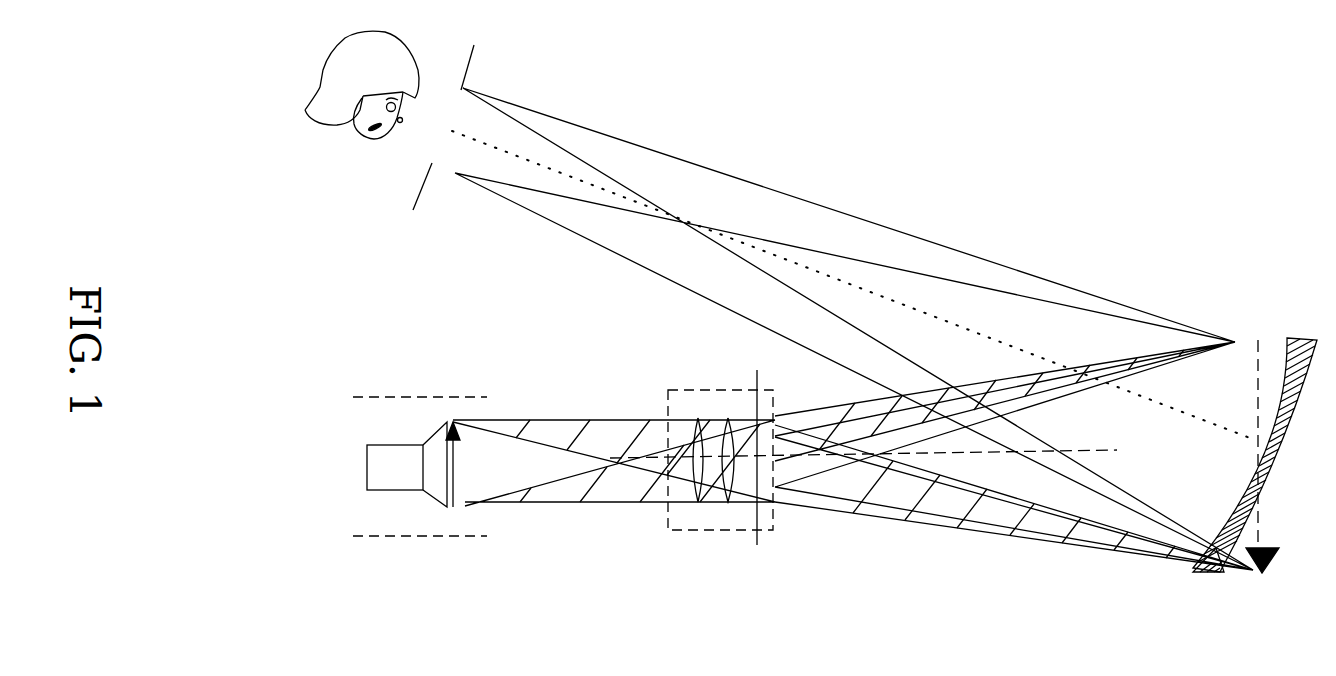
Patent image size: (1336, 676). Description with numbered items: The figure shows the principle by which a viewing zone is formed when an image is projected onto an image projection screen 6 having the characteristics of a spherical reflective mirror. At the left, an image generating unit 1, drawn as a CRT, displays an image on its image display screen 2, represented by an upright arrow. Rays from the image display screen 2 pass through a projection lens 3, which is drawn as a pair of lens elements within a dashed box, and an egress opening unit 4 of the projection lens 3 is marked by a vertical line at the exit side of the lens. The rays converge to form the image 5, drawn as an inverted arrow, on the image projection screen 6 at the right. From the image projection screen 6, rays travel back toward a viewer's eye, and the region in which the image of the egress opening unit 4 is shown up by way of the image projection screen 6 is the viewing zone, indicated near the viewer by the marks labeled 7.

The image generating unit 1 is at (393, 528).
The image display screen 2 is at (453, 507).
The projection lens 3 is at (675, 530).
The egress opening unit 4 is at (752, 390).
The image 5 is at (1247, 569).
The image projection screen 6 is at (1297, 338).
The virtual image 7 is at (470, 66).